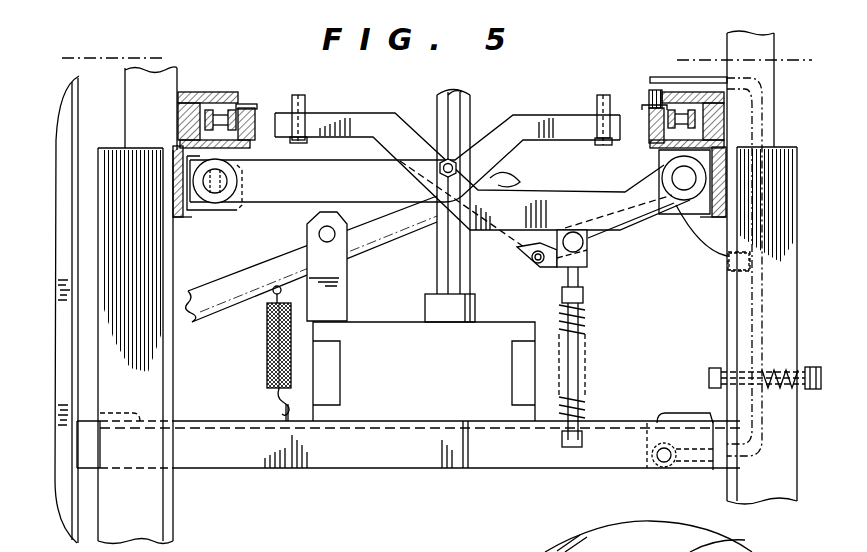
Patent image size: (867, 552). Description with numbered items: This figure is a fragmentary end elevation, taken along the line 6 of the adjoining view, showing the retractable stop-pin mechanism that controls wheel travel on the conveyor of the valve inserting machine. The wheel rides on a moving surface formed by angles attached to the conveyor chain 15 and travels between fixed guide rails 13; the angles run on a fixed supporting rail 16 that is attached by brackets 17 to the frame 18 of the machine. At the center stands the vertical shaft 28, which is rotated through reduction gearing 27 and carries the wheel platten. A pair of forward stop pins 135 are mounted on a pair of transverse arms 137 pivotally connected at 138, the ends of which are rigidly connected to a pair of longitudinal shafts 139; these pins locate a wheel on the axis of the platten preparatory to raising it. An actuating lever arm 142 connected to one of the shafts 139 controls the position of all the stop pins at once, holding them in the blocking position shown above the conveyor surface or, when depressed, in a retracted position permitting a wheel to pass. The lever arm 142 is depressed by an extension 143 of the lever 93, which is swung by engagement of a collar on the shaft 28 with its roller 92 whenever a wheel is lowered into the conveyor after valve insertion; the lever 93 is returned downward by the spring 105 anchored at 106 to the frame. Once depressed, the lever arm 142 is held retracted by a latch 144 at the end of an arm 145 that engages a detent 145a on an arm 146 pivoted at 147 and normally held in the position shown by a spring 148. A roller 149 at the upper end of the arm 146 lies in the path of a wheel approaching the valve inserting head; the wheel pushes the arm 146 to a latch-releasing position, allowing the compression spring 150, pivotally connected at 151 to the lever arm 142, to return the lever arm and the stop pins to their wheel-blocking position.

The section line 6 is at (70, 25).
The fixed guide rails 13 is at (240, 99).
The conveyor chain 15 is at (222, 108).
The fixed supporting rail 16 is at (252, 140).
The brackets 17 is at (178, 147).
The frame 18 is at (170, 277).
The reduction gearing 27 is at (385, 336).
The vertical shaft 28 is at (463, 272).
The roller 92 is at (477, 228).
The lever 93 is at (403, 224).
The spring 105 is at (257, 337).
The spring anchor 106 is at (283, 418).
The forward stop pins 135 is at (306, 112).
The transverse arms 137 is at (270, 190).
The pivotal connection 138 is at (463, 163).
The longitudinal shafts 139 is at (215, 202).
The actuating lever arm 142 is at (595, 238).
The extension 143 is at (530, 190).
The latch 144 is at (724, 274).
The arm 145 is at (707, 234).
The detent 145a is at (752, 264).
The arm 146 is at (758, 343).
The pivot 147 is at (666, 470).
The spring 148 is at (771, 368).
The roller 149 is at (651, 95).
The compression spring 150 is at (584, 349).
The pivotal connection 151 is at (590, 258).